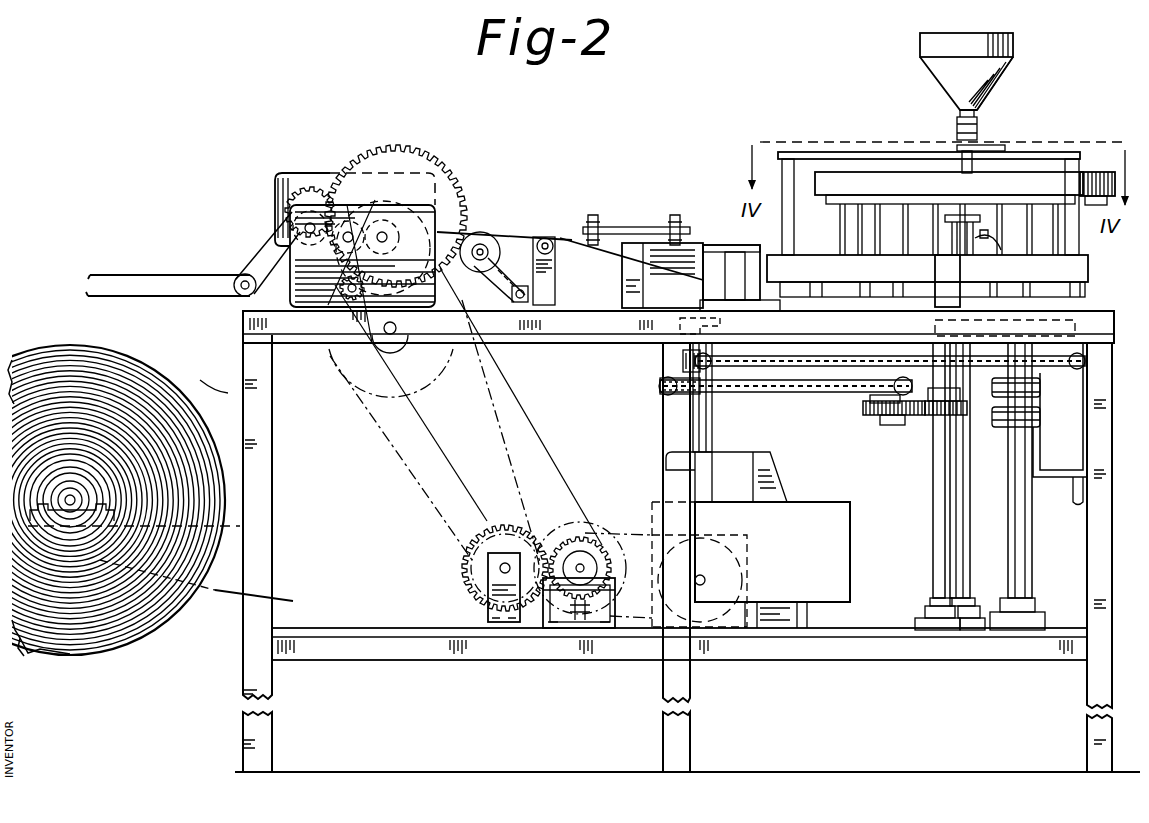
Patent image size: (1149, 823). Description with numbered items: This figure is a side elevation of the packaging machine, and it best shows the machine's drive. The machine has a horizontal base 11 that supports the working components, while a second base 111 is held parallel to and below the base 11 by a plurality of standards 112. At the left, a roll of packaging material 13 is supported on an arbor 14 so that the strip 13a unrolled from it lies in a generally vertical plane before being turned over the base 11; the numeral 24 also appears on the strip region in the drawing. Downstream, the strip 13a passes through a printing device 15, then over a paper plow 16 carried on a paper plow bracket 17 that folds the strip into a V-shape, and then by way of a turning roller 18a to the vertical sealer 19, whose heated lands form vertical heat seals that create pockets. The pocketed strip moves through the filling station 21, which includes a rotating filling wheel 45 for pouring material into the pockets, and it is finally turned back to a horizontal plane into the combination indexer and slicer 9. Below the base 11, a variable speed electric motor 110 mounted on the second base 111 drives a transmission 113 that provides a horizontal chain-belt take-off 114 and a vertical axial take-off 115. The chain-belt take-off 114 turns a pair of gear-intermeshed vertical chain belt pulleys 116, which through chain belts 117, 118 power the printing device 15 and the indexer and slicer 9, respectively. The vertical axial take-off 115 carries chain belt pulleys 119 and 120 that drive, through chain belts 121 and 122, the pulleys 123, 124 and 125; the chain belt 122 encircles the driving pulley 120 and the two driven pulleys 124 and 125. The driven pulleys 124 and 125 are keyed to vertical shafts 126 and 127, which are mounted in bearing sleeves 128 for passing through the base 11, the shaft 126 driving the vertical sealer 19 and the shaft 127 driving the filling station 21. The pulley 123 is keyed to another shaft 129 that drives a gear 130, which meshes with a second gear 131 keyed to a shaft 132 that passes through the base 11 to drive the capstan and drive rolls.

The combination indexer and slicer 9 is at (330, 174).
The horizontal base 11 is at (585, 325).
The roll of packaging material 13 is at (163, 338).
The strip 13a is at (264, 250).
The arbor 14 is at (82, 500).
The printing device 15 is at (440, 218).
The paper plow 16 is at (655, 246).
The paper plow bracket 17 is at (643, 230).
The turning roller 18a is at (932, 274).
The vertical sealer 19 is at (1033, 290).
The filling station 21 is at (1097, 172).
The strip 24 is at (184, 274).
The rotating filling wheel 45 is at (882, 180).
The variable speed electric motor 110 is at (730, 549).
The second base 111 is at (565, 648).
The standards 112 is at (272, 528).
The transmission 113 is at (725, 527).
The horizontal chain-belt take-off 114 is at (718, 628).
The vertical axial take-off 115 is at (714, 431).
The vertical chain belt pulleys 116 is at (548, 546).
The chain belt 117 is at (567, 468).
The chain belt 118 is at (405, 416).
The chain belt pulley 119 is at (690, 396).
The chain belt pulley 120 is at (695, 371).
The chain belt 121 is at (836, 386).
The chain belt 122 is at (783, 338).
The pulley 123 is at (872, 399).
The driven pulley 124 is at (1066, 370).
The driven pulley 125 is at (918, 352).
The vertical shaft 126 is at (1025, 553).
The vertical shaft 127 is at (960, 530).
The bearing sleeves 128 is at (1060, 331).
The shaft 129 is at (890, 346).
The gear 130 is at (905, 418).
The second gear 131 is at (931, 420).
The shaft 132 is at (940, 500).